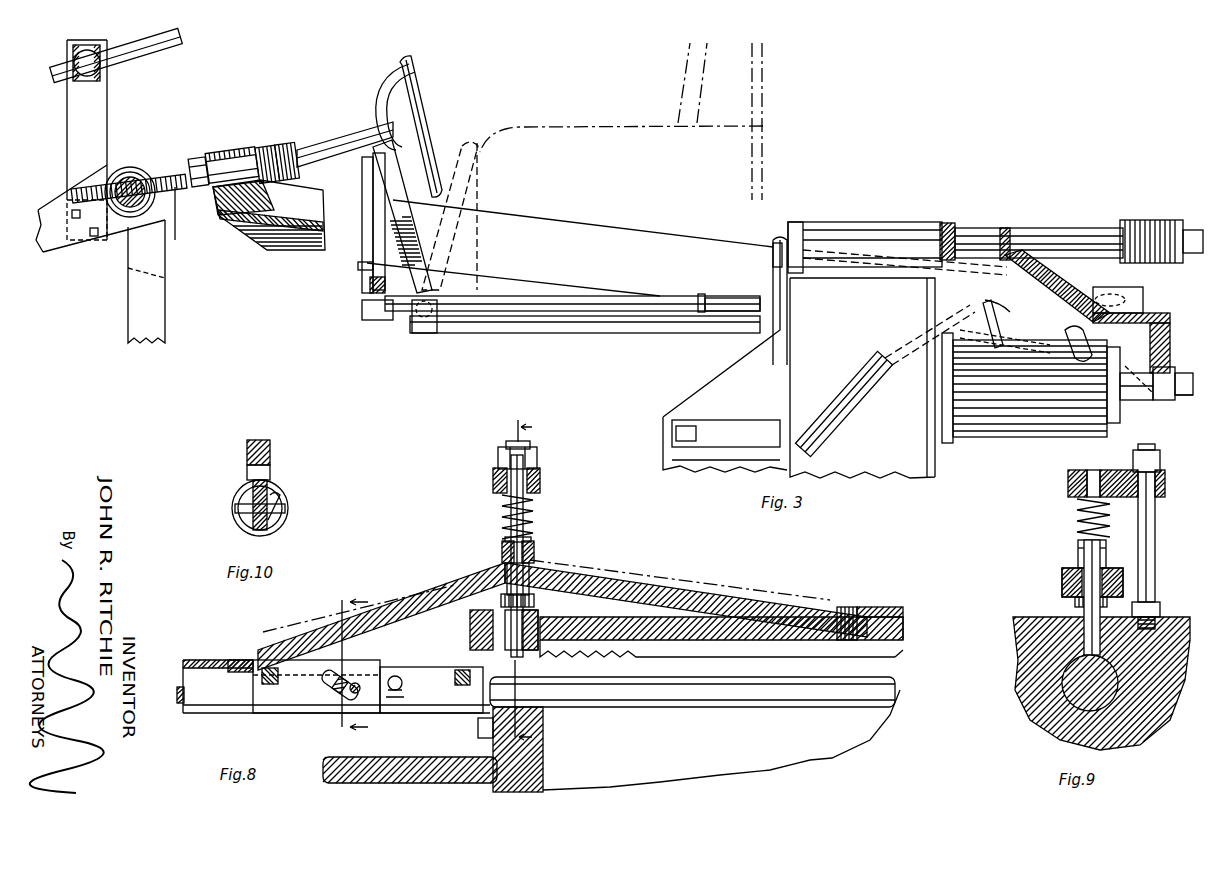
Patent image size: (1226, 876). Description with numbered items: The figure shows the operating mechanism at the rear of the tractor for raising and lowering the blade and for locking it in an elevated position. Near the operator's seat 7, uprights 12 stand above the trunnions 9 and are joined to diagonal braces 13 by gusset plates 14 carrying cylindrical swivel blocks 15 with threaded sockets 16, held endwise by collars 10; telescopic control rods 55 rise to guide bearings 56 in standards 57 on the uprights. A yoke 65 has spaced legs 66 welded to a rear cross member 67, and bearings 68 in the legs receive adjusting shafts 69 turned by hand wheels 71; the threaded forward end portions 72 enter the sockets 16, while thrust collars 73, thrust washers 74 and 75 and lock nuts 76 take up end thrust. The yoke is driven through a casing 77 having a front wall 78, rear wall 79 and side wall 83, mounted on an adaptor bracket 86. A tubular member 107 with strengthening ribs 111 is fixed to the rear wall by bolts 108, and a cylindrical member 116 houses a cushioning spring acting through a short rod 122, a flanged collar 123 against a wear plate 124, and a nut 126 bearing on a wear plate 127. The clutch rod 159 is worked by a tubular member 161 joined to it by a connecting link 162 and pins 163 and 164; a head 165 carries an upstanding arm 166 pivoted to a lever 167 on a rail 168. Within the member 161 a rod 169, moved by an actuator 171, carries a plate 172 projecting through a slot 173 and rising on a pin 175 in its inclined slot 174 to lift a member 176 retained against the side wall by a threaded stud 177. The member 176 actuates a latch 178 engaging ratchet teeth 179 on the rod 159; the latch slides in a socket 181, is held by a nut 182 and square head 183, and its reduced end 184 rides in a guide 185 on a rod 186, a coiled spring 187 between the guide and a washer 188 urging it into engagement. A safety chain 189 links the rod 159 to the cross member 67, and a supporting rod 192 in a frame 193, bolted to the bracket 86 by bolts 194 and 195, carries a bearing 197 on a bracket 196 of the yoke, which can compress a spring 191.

In FIG. 3, the operator's seat 7 is at (605, 125).
In FIG. 8, the trunnions 9 is at (521, 580).
In FIG. 3, the collars 10 is at (129, 168).
In FIG. 8, the collars 10 is at (351, 667).
In FIG. 3, the uprights 12 is at (130, 331).
In FIG. 3, the diagonal braces 13 is at (52, 210).
In FIG. 3, the gusset plates 14 is at (117, 266).
In FIG. 3, the swivel blocks 15 is at (133, 178).
In FIG. 3, the threaded socket 16 is at (150, 182).
In FIG. 3, the telescopic control rods 55 is at (181, 45).
In FIG. 3, the guide bearings 56 is at (88, 50).
In FIG. 3, the standards 57 is at (100, 103).
In FIG. 3, the yoke 65 is at (522, 205).
In FIG. 3, the legs 66 is at (310, 252).
In FIG. 3, the rear cross member 67 is at (1170, 328).
In FIG. 3, the bearings 68 is at (240, 150).
In FIG. 3, the adjusting shafts 69 is at (333, 140).
In FIG. 3, the hand wheels 71 is at (425, 91).
In FIG. 3, the threaded forward end portions 72 is at (176, 222).
In FIG. 3, the thrust collars 73 is at (212, 200).
In FIG. 3, the thrust washers 74 is at (200, 160).
In FIG. 3, the thrust washers 75 is at (268, 148).
In FIG. 3, the lock nuts 76 is at (288, 145).
In FIG. 3, the casing 77 is at (901, 488).
In FIG. 8, the casing 77 is at (913, 617).
In FIG. 9, the front wall 78 is at (1178, 620).
In FIG. 3, the rear wall 79 is at (930, 480).
In FIG. 8, the side wall 83 is at (885, 607).
In FIG. 3, the adaptor bracket 86 is at (700, 400).
In FIG. 8, the adaptor bracket 86 is at (323, 778).
In FIG. 3, the tubular member 107 is at (1060, 438).
In FIG. 3, the bolts 108 is at (948, 405).
In FIG. 3, the strengthening ribs 111 is at (1025, 350).
In FIG. 3, the cylindrical member 116 is at (1115, 425).
In FIG. 3, the short rod 122 is at (1165, 373).
In FIG. 3, the flanged collar 123 is at (1132, 401).
In FIG. 3, the wear plate 124 is at (1148, 370).
In FIG. 3, the nut 126 is at (1182, 374).
In FIG. 3, the wear plate 127 is at (1176, 400).
In FIG. 3, the clutch rod 159 is at (722, 314).
In FIG. 8, the clutch rod 159 is at (782, 708).
In FIG. 9, the clutch rod 159 is at (1065, 695).
In FIG. 3, the tubular member 161 is at (605, 312).
In FIG. 10, the tubular member 161 is at (237, 492).
In FIG. 8, the tubular member 161 is at (215, 714).
In FIG. 8, the connecting link 162 is at (455, 668).
In FIG. 3, the pin 163 is at (703, 296).
In FIG. 8, the pin 163 is at (493, 760).
In FIG. 8, the pin 164 is at (395, 700).
In FIG. 3, the head 165 is at (380, 322).
In FIG. 3, the upstanding arm 166 is at (378, 228).
In FIG. 3, the lever 167 is at (400, 177).
In FIG. 3, the rail 168 is at (490, 334).
In FIG. 8, the rod 169 is at (182, 688).
In FIG. 3, the actuator 171 is at (360, 286).
In FIG. 10, the plate 172 is at (280, 498).
In FIG. 8, the plate 172 is at (245, 665).
In FIG. 10, the slot 173 is at (275, 490).
In FIG. 8, the slot 173 is at (243, 662).
In FIG. 8, the inclined slot 174 is at (335, 700).
In FIG. 10, the pin 175 is at (234, 509).
In FIG. 8, the pin 175 is at (350, 683).
In FIG. 10, the member 176 is at (268, 440).
In FIG. 8, the member 176 is at (381, 590).
In FIG. 9, the member 176 is at (1062, 592).
In FIG. 8, the threaded stud 177 is at (850, 607).
In FIG. 8, the latch 178 is at (520, 660).
In FIG. 9, the latch 178 is at (1085, 640).
In FIG. 8, the ratchet teeth 179 is at (605, 655).
In FIG. 8, the socket 181 is at (530, 605).
In FIG. 8, the nut 182 is at (531, 572).
In FIG. 9, the nut 182 is at (1108, 558).
In FIG. 8, the square head 183 is at (535, 604).
In FIG. 9, the square head 183 is at (1075, 603).
In FIG. 8, the upper reduced end portion 184 is at (505, 515).
In FIG. 9, the upper reduced end portion 184 is at (1088, 486).
In FIG. 8, the guide 185 is at (495, 478).
In FIG. 9, the guide 185 is at (1068, 497).
In FIG. 8, the rod 186 is at (531, 452).
In FIG. 9, the rod 186 is at (1156, 548).
In FIG. 8, the coiled spring 187 is at (535, 545).
In FIG. 9, the coiled spring 187 is at (1080, 525).
In FIG. 8, the washer 188 is at (500, 550).
In FIG. 9, the washer 188 is at (1062, 584).
In FIG. 3, the safety chain 189 is at (1075, 332).
In FIG. 3, the compression spring 191 is at (1142, 224).
In FIG. 3, the supporting rod 192 is at (1068, 236).
In FIG. 3, the frame 193 is at (890, 224).
In FIG. 3, the bolt 194 is at (805, 248).
In FIG. 3, the bolt 195 is at (806, 445).
In FIG. 3, the bracket 196 is at (1078, 266).
In FIG. 3, the bearing 197 is at (1005, 233).